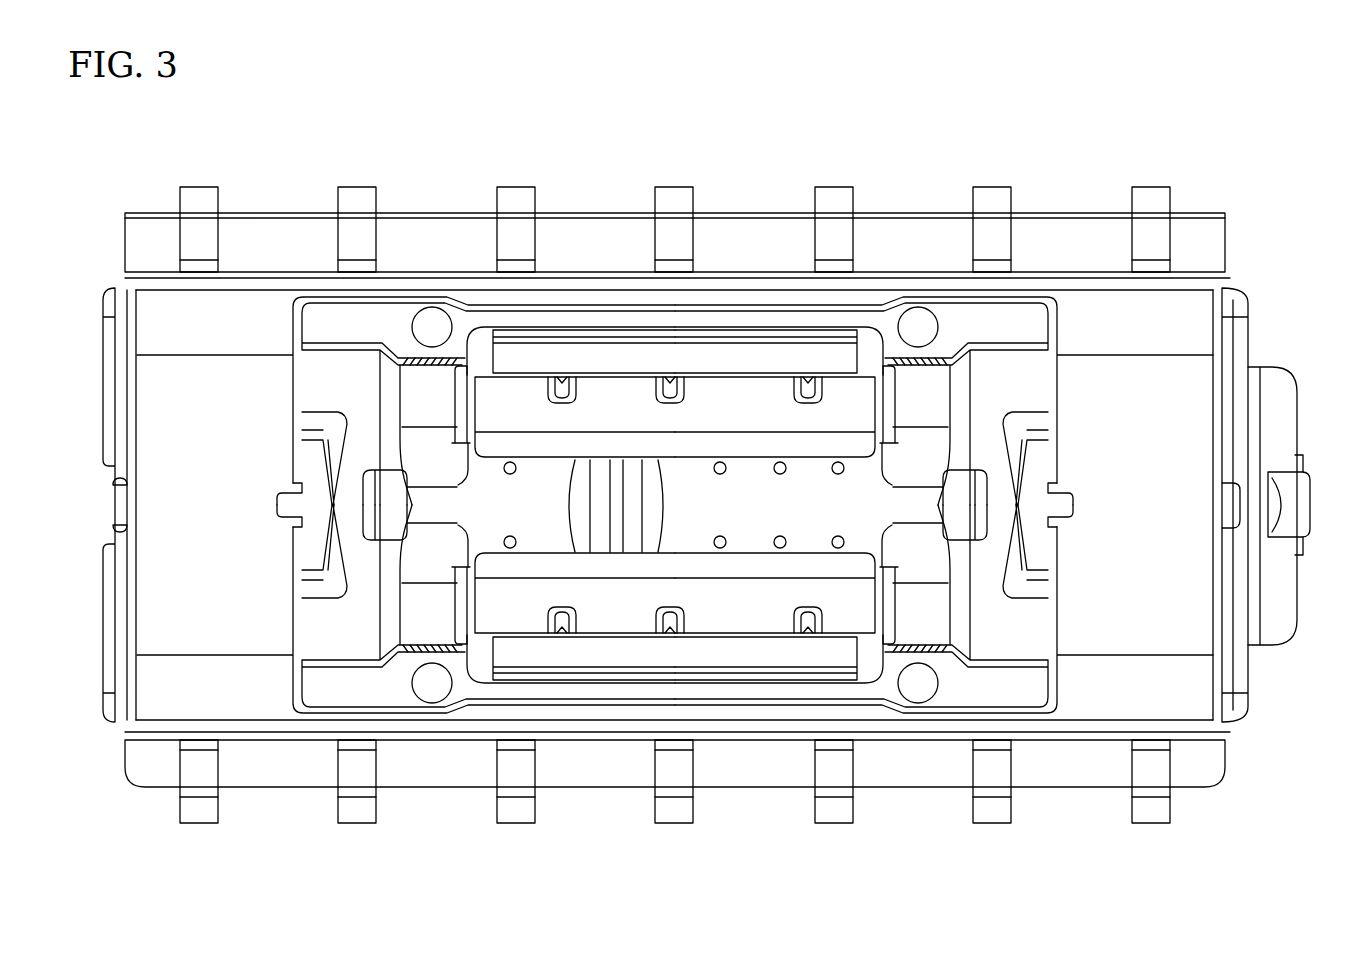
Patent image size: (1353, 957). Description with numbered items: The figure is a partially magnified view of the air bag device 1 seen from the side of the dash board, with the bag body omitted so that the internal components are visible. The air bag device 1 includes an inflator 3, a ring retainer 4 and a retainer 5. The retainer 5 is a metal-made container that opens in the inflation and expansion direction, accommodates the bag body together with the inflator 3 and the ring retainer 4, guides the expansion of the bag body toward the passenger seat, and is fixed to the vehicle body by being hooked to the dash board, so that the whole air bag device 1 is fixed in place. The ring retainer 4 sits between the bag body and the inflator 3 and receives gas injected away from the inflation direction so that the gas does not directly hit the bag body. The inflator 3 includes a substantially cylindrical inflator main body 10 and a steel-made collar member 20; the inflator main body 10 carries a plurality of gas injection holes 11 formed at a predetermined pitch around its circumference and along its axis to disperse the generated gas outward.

The air bag device 1 is at (1290, 281).
The inflator 3 is at (736, 300).
The ring retainer 4 is at (1028, 718).
The retainer 5 is at (1050, 228).
The inflator main body 10 is at (757, 541).
The gas injection holes 11 is at (516, 535).
The steel-made collar member 20 is at (617, 613).